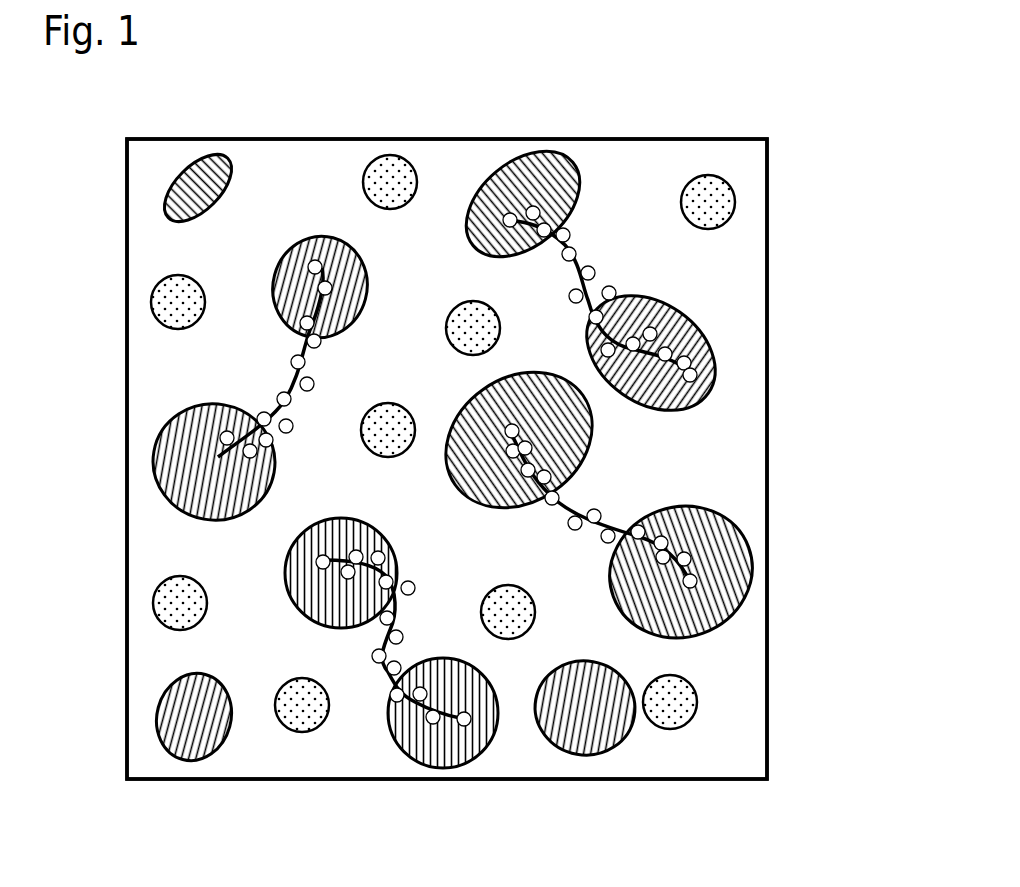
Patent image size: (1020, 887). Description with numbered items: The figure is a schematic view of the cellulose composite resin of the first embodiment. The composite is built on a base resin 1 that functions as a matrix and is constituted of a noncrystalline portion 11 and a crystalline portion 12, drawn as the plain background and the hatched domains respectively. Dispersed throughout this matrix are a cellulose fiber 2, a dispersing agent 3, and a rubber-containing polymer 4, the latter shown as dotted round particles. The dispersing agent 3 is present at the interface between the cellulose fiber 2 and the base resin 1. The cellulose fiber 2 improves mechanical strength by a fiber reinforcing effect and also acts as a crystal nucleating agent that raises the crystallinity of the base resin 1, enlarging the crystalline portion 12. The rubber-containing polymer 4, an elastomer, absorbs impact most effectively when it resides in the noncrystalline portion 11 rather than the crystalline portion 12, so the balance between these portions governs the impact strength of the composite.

The base resin 1 is at (882, 348).
The noncrystalline portion 11 is at (745, 377).
The crystalline portion 12 is at (730, 512).
The cellulose fiber 2 is at (578, 258).
The dispersing agent 3 is at (687, 560).
The rubber-containing polymer 4 is at (697, 697).